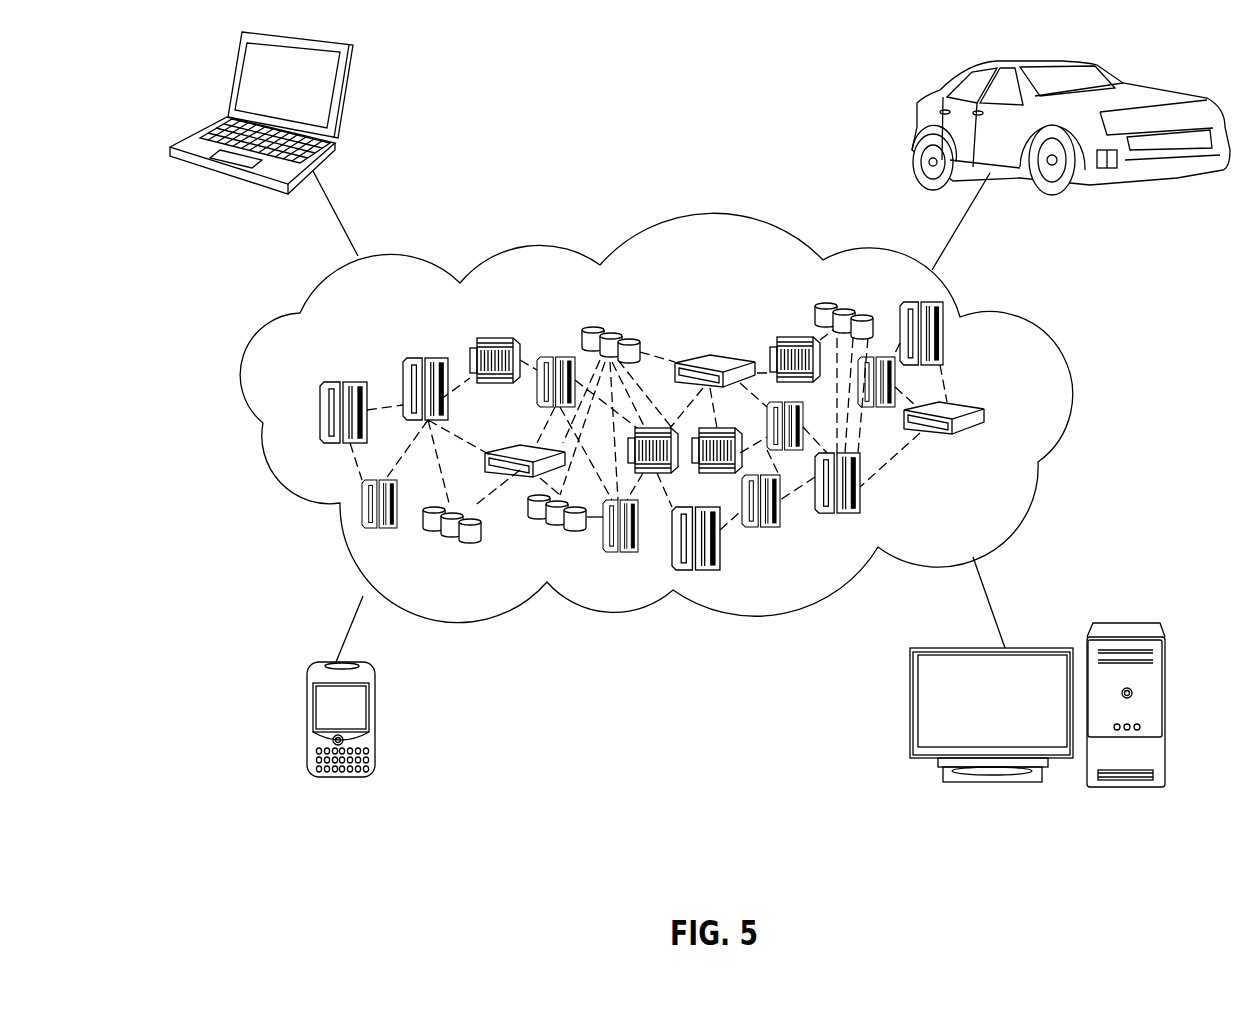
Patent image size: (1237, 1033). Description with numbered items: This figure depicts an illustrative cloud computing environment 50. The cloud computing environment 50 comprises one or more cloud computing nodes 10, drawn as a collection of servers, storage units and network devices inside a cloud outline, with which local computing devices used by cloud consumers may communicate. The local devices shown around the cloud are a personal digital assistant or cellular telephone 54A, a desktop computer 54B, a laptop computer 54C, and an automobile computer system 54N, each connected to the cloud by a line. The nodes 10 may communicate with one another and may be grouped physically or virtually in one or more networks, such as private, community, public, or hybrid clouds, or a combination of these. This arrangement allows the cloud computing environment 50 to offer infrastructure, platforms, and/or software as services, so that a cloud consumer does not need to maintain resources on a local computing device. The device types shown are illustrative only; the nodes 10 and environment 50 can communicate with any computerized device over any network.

The cloud computing environment 50 is at (1050, 325).
The cloud computing nodes 10 is at (1050, 408).
The personal digital assistant (PDA) or cellular telephone 54A is at (307, 722).
The desktop computer 54B is at (1130, 623).
The laptop computer 54C is at (347, 100).
The automobile computer system 54N is at (925, 108).